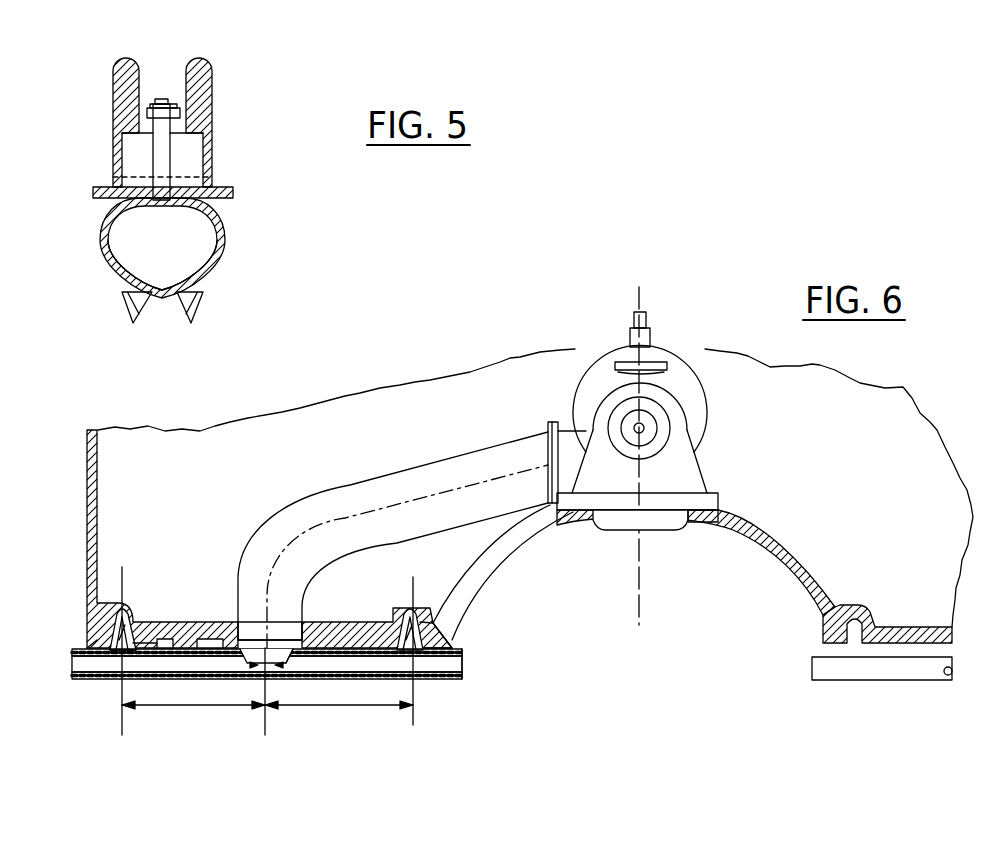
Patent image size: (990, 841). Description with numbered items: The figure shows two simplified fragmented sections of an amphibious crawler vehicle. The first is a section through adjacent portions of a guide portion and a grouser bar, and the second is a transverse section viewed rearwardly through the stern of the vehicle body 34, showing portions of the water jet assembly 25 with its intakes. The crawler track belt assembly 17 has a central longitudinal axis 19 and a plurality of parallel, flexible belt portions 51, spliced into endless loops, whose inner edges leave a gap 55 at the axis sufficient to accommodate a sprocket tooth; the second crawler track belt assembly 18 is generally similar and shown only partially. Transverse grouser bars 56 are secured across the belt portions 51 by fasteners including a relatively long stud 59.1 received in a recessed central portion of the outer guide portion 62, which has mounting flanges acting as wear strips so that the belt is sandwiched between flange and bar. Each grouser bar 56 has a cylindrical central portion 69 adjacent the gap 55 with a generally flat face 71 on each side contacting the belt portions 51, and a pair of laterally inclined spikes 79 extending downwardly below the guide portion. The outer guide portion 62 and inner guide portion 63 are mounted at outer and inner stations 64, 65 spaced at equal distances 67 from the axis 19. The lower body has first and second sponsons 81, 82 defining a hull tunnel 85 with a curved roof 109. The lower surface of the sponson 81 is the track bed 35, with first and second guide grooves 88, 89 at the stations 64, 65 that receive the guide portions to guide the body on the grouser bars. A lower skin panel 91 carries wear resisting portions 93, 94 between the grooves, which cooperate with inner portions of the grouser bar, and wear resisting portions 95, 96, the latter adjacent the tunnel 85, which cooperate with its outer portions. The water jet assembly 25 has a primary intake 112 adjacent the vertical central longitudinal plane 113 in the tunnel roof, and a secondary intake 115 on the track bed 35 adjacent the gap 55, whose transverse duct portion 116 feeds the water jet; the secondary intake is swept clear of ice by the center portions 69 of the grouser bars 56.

In FIG. 6, the first crawler track belt assembly 17 is at (344, 740).
In FIG. 6, the second crawler track belt assembly 18 is at (881, 691).
In FIG. 6, the central longitudinal axis 19 is at (265, 716).
In FIG. 6, the water jet assembly 25 is at (707, 424).
In FIG. 6, the vehicle body 34 is at (104, 482).
In FIG. 6, the lower track bed 35 is at (380, 666).
In FIG. 5, the belt portions 51 is at (226, 190).
In FIG. 6, the belt portions 51 is at (62, 657).
In FIG. 6, the gap 55 is at (270, 669).
In FIG. 5, the grouser bar 56 is at (226, 225).
In FIG. 6, the grouser bar 56 is at (445, 682).
In FIG. 5, the long stud 59.1 is at (163, 100).
In FIG. 5, the outer guide portion 62 is at (214, 95).
In FIG. 6, the outer guide portion 62 is at (118, 655).
In FIG. 6, the inner guide portion 63 is at (455, 633).
In FIG. 6, the outer station 64 is at (123, 578).
In FIG. 6, the inner station 65 is at (414, 587).
In FIG. 6, the equal distances 67 is at (196, 707).
In FIG. 6, the central portion 69 is at (284, 652).
In FIG. 5, the flat face 71 is at (143, 207).
In FIG. 5, the laterally inclined spikes 79 is at (185, 333).
In FIG. 6, the first sponson 81 is at (492, 568).
In FIG. 6, the second sponson 82 is at (790, 580).
In FIG. 6, the hull tunnel 85 is at (681, 629).
In FIG. 6, the first guide groove 88 is at (130, 617).
In FIG. 6, the second guide groove 89 is at (408, 612).
In FIG. 6, the lower skin panel 91 is at (358, 604).
In FIG. 6, the wear resisting portion 93 is at (197, 648).
In FIG. 6, the wear resisting portion 94 is at (134, 643).
In FIG. 6, the wear resisting portion 95 is at (93, 643).
In FIG. 6, the wear resisting portion 96 is at (457, 648).
In FIG. 6, the tunnel roof 109 is at (700, 525).
In FIG. 6, the primary intake 112 is at (620, 533).
In FIG. 6, the vertical central longitudinal plane 113 is at (638, 607).
In FIG. 6, the secondary intake 115 is at (240, 633).
In FIG. 6, the transverse duct portion 116 is at (362, 478).